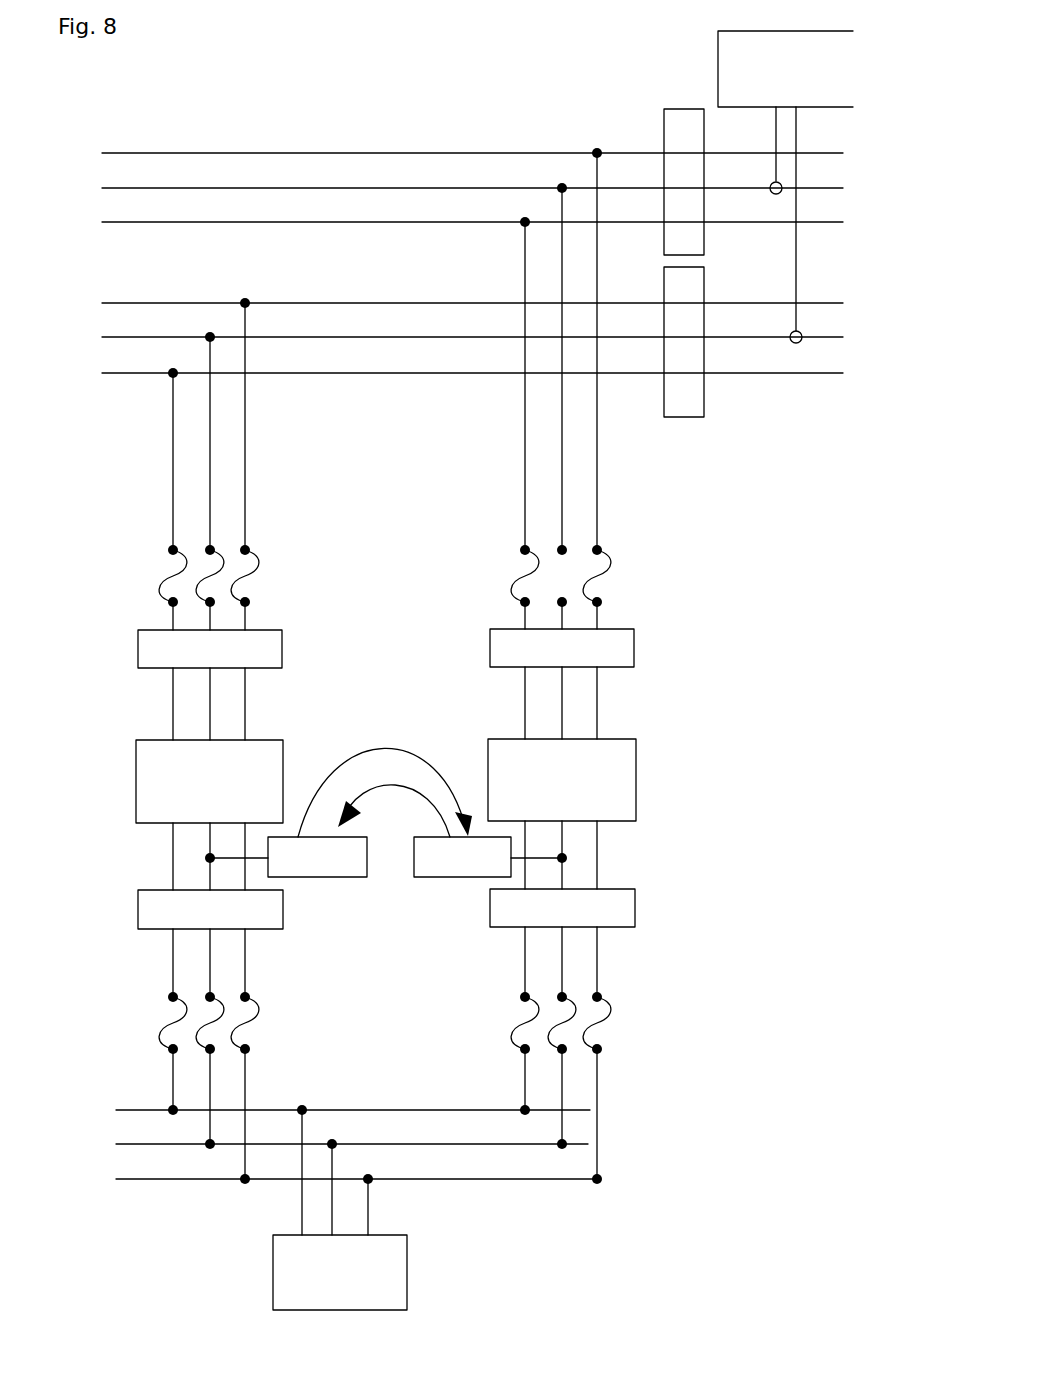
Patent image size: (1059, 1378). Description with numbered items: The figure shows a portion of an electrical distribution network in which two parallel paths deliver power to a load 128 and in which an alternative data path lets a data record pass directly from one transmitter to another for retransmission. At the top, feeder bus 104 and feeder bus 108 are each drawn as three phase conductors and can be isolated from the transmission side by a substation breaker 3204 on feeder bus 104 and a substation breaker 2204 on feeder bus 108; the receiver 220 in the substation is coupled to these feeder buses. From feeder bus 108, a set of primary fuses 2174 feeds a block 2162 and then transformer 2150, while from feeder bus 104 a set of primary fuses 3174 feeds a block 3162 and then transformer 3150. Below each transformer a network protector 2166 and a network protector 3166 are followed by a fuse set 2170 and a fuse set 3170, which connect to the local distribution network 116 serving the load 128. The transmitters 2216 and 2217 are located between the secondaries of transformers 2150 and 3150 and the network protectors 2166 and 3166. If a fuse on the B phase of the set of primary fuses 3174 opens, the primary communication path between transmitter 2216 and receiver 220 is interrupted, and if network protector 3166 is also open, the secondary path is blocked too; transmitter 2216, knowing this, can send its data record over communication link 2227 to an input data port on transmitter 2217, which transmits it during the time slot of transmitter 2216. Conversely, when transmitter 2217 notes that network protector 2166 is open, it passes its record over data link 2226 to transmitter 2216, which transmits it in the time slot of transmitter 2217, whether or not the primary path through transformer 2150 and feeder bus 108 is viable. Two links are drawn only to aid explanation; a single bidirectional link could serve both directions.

The feeder bus 104 is at (93, 150).
The feeder bus 108 is at (93, 300).
The local distribution network 116 is at (107, 1107).
The load 128 is at (340, 1207).
The receiver 220 is at (785, 187).
The substation breaker 3204 is at (672, 112).
The substation breaker 2204 is at (675, 395).
The set of primary fuses 2174 is at (130, 545).
The set of primary fuses 3174 is at (625, 542).
The rectifier of first power module 2162 is at (210, 649).
The rectifier of second power module 3162 is at (562, 648).
The transformer 2150 is at (209, 781).
The transformer 3150 is at (562, 780).
The network protector 2166 is at (210, 909).
The network protector 3166 is at (562, 908).
The transmitter 2217 is at (286, 857).
The transmitter 2216 is at (490, 857).
The data link 2226 is at (425, 758).
The communication link 2227 is at (403, 793).
The fuse set 2170 is at (155, 985).
The fuse set 3170 is at (627, 982).